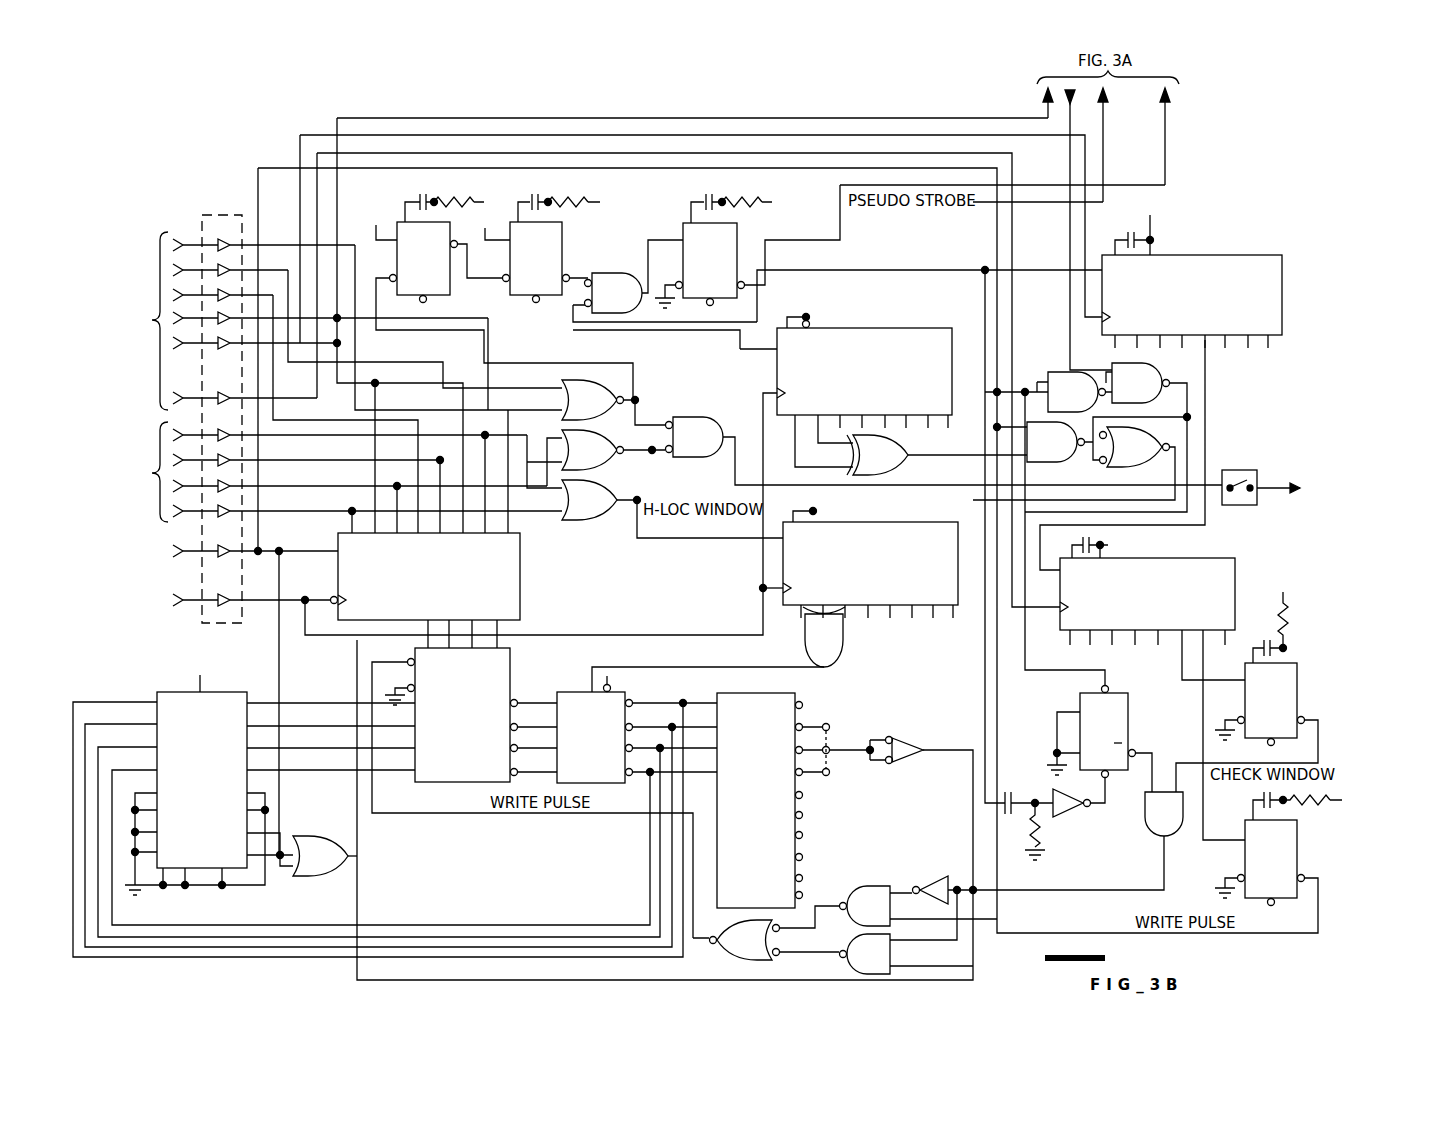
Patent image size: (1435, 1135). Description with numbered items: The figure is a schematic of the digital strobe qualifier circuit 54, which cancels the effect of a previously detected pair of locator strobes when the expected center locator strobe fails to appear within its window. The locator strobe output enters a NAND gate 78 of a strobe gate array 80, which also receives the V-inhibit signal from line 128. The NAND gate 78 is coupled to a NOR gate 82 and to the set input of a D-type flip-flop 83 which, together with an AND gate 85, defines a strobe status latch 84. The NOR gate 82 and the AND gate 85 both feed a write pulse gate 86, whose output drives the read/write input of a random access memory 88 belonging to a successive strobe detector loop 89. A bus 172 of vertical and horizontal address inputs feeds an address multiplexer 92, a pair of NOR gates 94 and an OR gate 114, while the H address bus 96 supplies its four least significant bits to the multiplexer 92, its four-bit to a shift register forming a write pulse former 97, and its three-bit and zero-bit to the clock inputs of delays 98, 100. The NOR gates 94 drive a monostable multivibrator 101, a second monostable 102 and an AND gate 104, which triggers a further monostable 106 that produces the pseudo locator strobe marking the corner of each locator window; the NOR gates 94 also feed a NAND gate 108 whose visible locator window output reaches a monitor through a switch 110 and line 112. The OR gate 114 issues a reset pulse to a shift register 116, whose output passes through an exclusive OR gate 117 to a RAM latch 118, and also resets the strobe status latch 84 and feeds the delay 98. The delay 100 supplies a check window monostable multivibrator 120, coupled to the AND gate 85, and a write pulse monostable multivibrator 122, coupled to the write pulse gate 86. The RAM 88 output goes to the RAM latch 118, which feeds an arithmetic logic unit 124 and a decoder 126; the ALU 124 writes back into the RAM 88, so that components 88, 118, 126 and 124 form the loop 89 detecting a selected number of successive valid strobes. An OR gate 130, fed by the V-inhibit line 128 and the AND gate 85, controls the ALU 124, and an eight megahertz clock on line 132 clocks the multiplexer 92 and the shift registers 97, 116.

The digital strobe qualifier circuit 54 is at (1228, 417).
The NAND gate 78 is at (1163, 368).
The strobe gate array 80 is at (1050, 370).
The NOR gate 82 is at (1124, 458).
The D-type flip-flop 83 is at (1128, 705).
The strobe status latch 84 is at (1108, 822).
The AND gate 85 is at (1175, 825).
The write pulse gate 86 is at (828, 890).
The random access memory (RAM) 88 is at (510, 665).
The successive strobe detector loop 89 is at (415, 852).
The address multiplexer 92 is at (520, 583).
The NOR gates 94 is at (619, 423).
The H address bus 96 is at (277, 321).
The write pulse former 97 is at (890, 328).
The delay 98 is at (1232, 255).
The delay 100 is at (1178, 558).
The monostable multivibrator 101 is at (443, 250).
The monostable multivibrator 102 is at (562, 252).
The AND gate 104 is at (642, 302).
The monostable multivibrator 106 is at (737, 232).
The NAND gate 108 is at (697, 417).
The switch 110 is at (1243, 472).
The line 112 is at (1277, 482).
The OR gate 114 is at (585, 508).
The shift register 116 is at (870, 522).
The exclusive OR gate 117 is at (838, 650).
The RAM latch 118 is at (625, 695).
The check window monostable multivibrator 120 is at (1297, 673).
The write pulse monostable multivibrator 122 is at (1297, 830).
The arithmetic logic unit (ALU) 124 is at (220, 692).
The decoder 126 is at (795, 805).
The line 128 is at (183, 554).
The OR gate 130 is at (330, 836).
The line 132 is at (183, 603).
The bus 172 is at (318, 471).